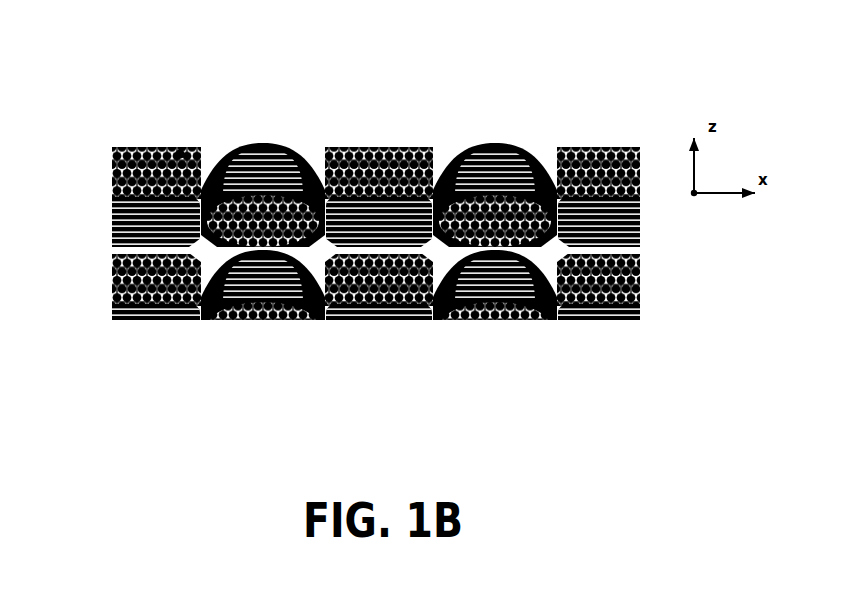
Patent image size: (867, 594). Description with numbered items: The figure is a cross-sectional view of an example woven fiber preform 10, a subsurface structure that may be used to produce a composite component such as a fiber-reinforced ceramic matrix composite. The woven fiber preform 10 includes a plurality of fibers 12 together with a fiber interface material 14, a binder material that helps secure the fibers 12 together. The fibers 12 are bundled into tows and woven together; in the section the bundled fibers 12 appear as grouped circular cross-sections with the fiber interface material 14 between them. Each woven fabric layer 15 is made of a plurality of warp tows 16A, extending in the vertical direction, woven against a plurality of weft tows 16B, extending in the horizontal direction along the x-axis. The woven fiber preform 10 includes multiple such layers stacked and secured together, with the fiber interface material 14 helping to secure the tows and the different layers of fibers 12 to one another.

The woven fiber preform 10 is at (557, 96).
The fibers 12 is at (138, 150).
The fiber interface material 14 is at (178, 152).
The woven fabric layer 15 is at (88, 145).
The warp tows 16A is at (174, 146).
The weft tows 16B is at (292, 137).